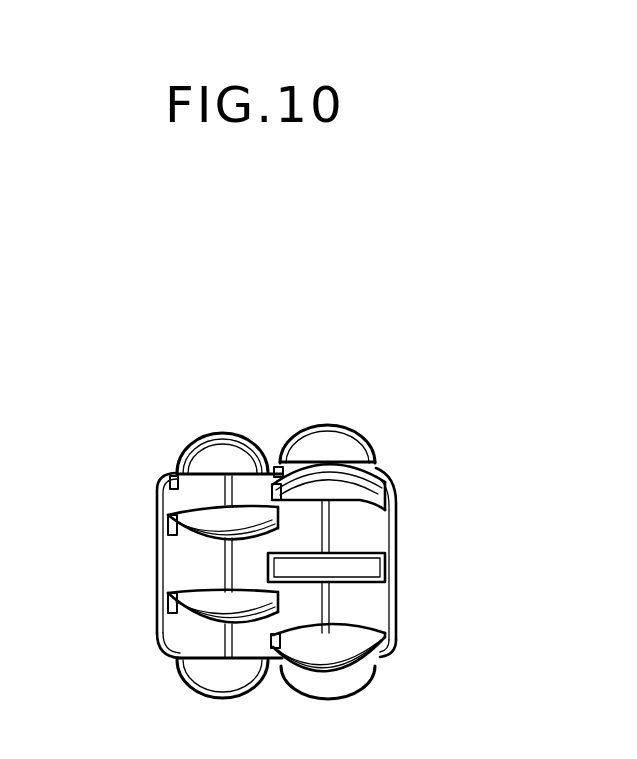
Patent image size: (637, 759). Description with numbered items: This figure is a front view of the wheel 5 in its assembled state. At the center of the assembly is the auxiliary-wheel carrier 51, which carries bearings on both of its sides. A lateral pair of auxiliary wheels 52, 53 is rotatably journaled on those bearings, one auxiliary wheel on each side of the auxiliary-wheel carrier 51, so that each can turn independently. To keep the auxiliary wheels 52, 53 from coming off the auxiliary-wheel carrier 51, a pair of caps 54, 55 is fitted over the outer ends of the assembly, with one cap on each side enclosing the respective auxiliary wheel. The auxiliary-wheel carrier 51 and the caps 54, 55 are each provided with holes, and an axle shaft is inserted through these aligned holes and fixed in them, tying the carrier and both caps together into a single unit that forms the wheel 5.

The wheel 5 is at (416, 349).
The auxiliary-wheel carrier 51 is at (254, 487).
The auxiliary wheel 52 is at (380, 473).
The auxiliary wheel 53 is at (213, 450).
The cap 54 is at (375, 540).
The cap 55 is at (197, 568).